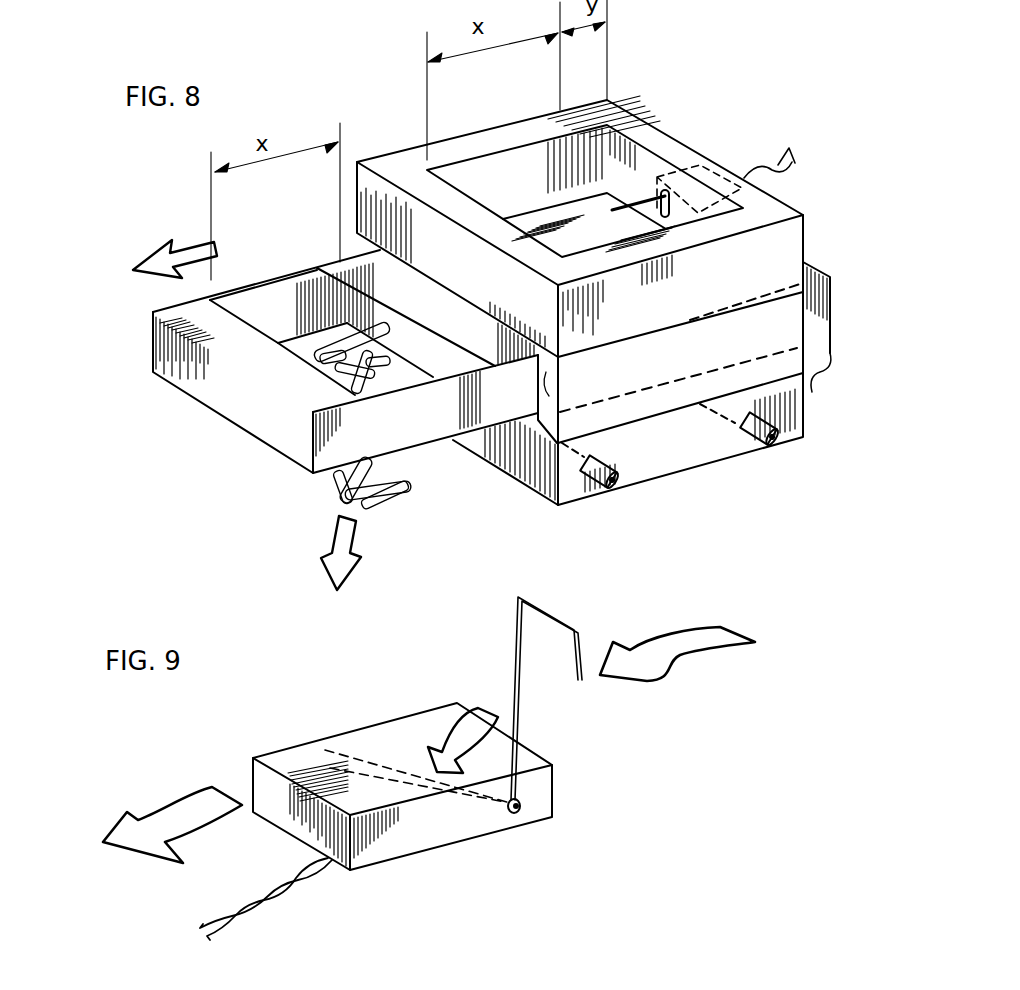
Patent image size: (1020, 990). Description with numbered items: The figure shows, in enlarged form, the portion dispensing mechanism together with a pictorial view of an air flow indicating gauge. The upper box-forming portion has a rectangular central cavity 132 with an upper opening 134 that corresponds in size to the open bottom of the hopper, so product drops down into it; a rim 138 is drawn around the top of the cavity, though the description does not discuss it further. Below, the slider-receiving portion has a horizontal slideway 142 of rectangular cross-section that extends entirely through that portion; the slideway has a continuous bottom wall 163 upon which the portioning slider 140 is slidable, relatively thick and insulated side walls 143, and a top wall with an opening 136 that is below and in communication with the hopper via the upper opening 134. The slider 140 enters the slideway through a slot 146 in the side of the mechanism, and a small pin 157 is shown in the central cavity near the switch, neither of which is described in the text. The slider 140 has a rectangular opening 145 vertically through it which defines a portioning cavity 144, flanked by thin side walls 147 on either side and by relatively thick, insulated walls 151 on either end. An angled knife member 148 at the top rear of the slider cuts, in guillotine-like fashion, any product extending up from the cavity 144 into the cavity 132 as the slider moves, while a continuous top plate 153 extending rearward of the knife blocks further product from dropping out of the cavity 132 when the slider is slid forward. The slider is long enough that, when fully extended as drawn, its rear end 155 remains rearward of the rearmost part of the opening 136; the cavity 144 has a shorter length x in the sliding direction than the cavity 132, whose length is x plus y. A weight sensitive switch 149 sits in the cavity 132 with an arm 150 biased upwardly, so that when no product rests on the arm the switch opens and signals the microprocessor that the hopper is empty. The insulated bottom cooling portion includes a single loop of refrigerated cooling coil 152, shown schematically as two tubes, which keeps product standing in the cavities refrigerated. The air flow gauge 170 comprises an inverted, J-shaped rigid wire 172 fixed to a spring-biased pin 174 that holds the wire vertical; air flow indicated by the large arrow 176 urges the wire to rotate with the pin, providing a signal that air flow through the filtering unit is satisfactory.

In FIG. 8, the rectangular central cavity 132 is at (585, 160).
In FIG. 8, the upper opening 134 is at (613, 138).
In FIG. 8, the opening 136 is at (555, 178).
In FIG. 8, the rim 138 is at (587, 99).
In FIG. 8, the portioning slider 140 is at (318, 361).
In FIG. 8, the horizontal slideway 142 is at (678, 389).
In FIG. 8, the side walls of the slideway 143 is at (822, 341).
In FIG. 8, the portioning cavity 144 is at (300, 311).
In FIG. 8, the rectangular opening 145 is at (326, 259).
In FIG. 8, the slot 146 is at (561, 383).
In FIG. 8, the thin side walls 147 is at (401, 451).
In FIG. 8, the angled knife member 148 is at (390, 320).
In FIG. 8, the weight sensitive switch 149 is at (771, 135).
In FIG. 8, the arm 150 is at (703, 171).
In FIG. 8, the insulated walls 151 is at (215, 424).
In FIG. 8, the refrigerated cooling coil 152 is at (680, 468).
In FIG. 8, the continuous top plate 153 is at (593, 302).
In FIG. 8, the rear end 155 is at (832, 372).
In FIG. 8, the pin 157 is at (664, 161).
In FIG. 8, the bottom wall 163 is at (734, 307).
In FIG. 9, the air flow gauge 170 is at (376, 795).
In FIG. 9, the wire 172 is at (512, 698).
In FIG. 9, the pin 174 is at (563, 816).
In FIG. 9, the large arrow 176 is at (677, 671).